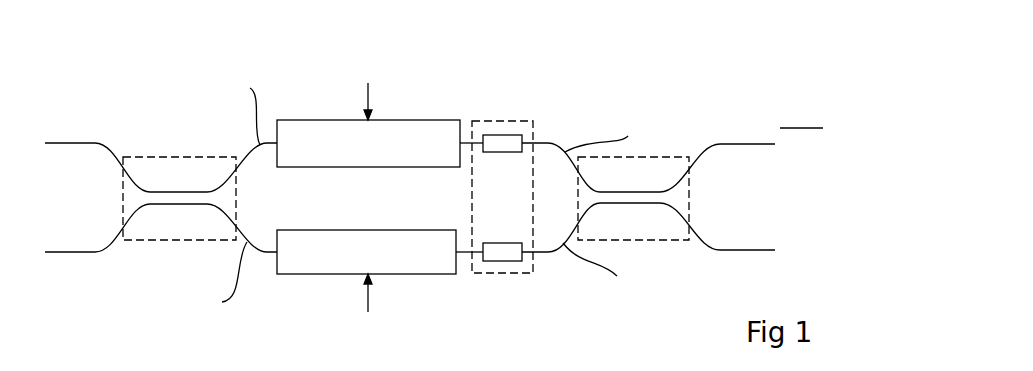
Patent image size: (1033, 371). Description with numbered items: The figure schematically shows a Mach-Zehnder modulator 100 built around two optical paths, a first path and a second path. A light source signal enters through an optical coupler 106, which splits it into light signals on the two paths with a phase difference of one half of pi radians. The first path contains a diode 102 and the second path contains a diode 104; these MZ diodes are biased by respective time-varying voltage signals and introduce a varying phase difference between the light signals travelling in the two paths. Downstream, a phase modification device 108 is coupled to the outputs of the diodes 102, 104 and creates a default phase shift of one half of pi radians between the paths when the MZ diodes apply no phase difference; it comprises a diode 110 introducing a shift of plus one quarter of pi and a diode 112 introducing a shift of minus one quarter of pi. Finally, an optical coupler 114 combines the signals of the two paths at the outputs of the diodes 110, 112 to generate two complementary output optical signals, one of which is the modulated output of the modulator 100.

The Mach-Zehnder modulator 100 is at (434, 173).
The diode 102 is at (433, 128).
The diode 104 is at (433, 262).
The optical coupler 106 is at (166, 157).
The phase modification device 108 is at (534, 198).
The diode 110 is at (510, 143).
The diode 112 is at (507, 252).
The optical coupler 114 is at (673, 158).